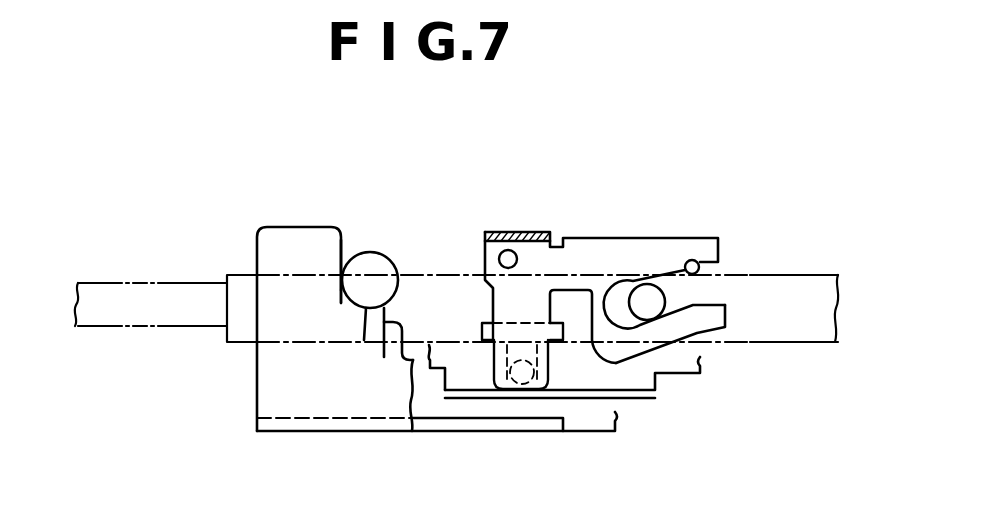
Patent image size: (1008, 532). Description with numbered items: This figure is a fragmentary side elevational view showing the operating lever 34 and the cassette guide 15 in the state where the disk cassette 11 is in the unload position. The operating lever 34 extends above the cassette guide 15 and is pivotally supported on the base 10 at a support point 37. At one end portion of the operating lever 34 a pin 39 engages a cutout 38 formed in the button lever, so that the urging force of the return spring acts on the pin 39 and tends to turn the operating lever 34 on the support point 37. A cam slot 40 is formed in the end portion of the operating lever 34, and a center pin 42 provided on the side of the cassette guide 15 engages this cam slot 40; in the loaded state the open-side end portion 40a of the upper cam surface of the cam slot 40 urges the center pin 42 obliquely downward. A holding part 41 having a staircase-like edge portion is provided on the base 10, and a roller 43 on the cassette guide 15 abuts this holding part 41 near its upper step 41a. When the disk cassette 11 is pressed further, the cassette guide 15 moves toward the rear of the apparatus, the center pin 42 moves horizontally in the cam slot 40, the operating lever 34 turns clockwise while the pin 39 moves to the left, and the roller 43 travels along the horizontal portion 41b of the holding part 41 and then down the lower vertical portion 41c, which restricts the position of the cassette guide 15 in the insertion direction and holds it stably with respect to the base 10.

The base 10 is at (280, 400).
The disk cassette 11 is at (178, 300).
The cassette guide 15 is at (788, 275).
The operating lever 34 is at (598, 245).
The support point 37 is at (508, 252).
The cutout 38 is at (551, 358).
The pin 39 is at (515, 380).
The cam slot 40 is at (688, 294).
The open-side end portion 40a is at (688, 259).
The holding part 41 is at (341, 304).
The projection 41a is at (342, 250).
The horizontal portion 41b is at (364, 340).
The lower vertical portion 41c is at (384, 357).
The center pin 42 is at (655, 305).
The roller 43 is at (377, 262).